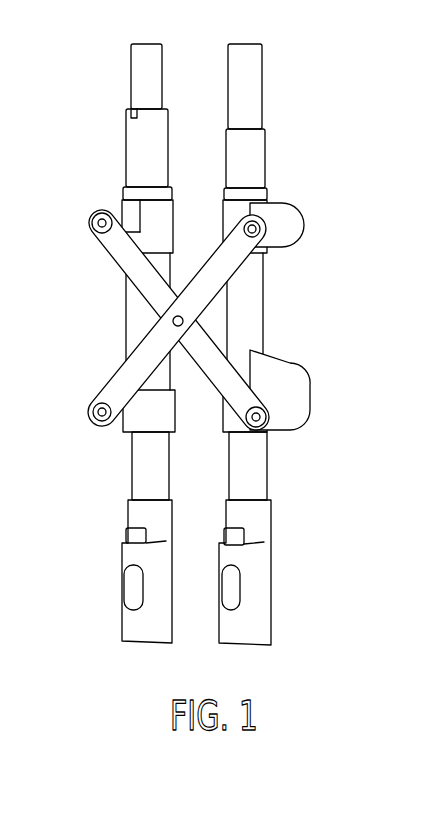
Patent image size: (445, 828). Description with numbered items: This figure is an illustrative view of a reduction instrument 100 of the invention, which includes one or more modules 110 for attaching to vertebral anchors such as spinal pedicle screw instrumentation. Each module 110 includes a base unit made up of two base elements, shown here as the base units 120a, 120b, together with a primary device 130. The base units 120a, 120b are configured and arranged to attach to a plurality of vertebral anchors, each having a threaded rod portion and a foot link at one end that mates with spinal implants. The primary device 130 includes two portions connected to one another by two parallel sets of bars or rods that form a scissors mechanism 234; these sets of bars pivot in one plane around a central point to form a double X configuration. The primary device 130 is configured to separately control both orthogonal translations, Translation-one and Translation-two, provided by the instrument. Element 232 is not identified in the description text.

The reduction instrument 100 is at (96, 690).
The module 110 is at (373, 213).
The base unit 120a is at (99, 343).
The base unit 120b is at (315, 500).
The primary device 130 is at (350, 342).
The upper rod section 232 is at (126, 151).
The scissors mechanism 234 is at (91, 264).